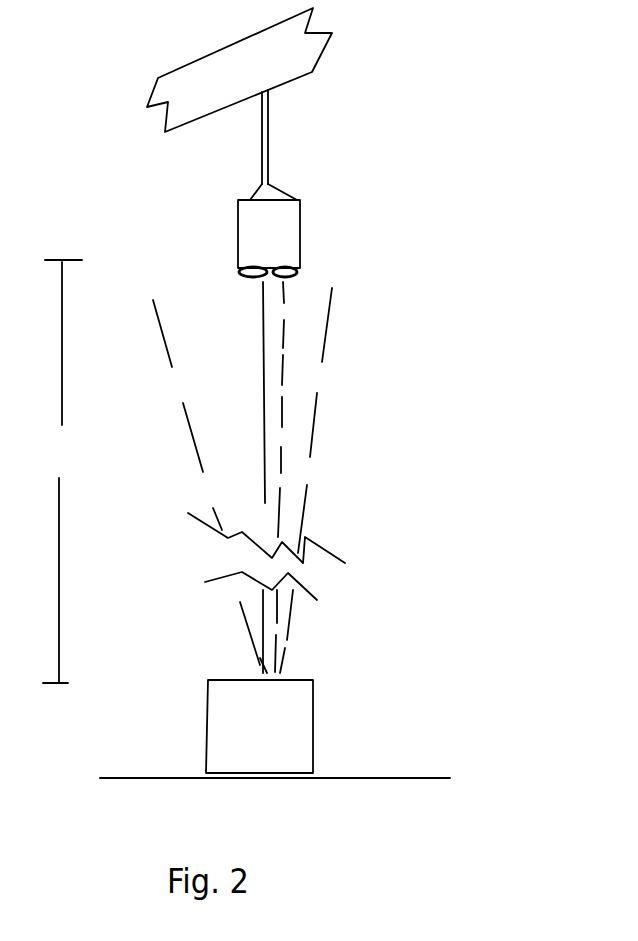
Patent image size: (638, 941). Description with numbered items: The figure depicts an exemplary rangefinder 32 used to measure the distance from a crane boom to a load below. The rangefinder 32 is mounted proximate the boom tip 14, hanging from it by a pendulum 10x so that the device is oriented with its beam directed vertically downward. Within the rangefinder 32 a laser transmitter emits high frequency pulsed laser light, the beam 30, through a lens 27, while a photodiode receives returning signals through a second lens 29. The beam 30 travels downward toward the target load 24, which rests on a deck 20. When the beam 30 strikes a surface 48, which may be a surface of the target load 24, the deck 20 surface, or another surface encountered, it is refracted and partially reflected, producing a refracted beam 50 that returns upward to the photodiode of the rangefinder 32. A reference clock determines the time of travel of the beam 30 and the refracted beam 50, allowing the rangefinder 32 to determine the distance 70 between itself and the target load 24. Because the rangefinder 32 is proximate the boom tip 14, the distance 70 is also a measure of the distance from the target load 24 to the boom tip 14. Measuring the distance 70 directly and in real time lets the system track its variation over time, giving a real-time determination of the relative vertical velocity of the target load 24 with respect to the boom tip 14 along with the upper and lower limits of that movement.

The boom tip 14 is at (225, 66).
The pendulum 10x is at (265, 190).
The rangefinder 32 is at (305, 229).
The lens 29 is at (240, 265).
The lens 27 is at (296, 270).
The beam 30 is at (283, 413).
The refracted beam 50 is at (257, 325).
The distance 70 is at (62, 471).
The target load 24 is at (293, 725).
The surface 48 is at (240, 680).
The deck 20 is at (368, 778).